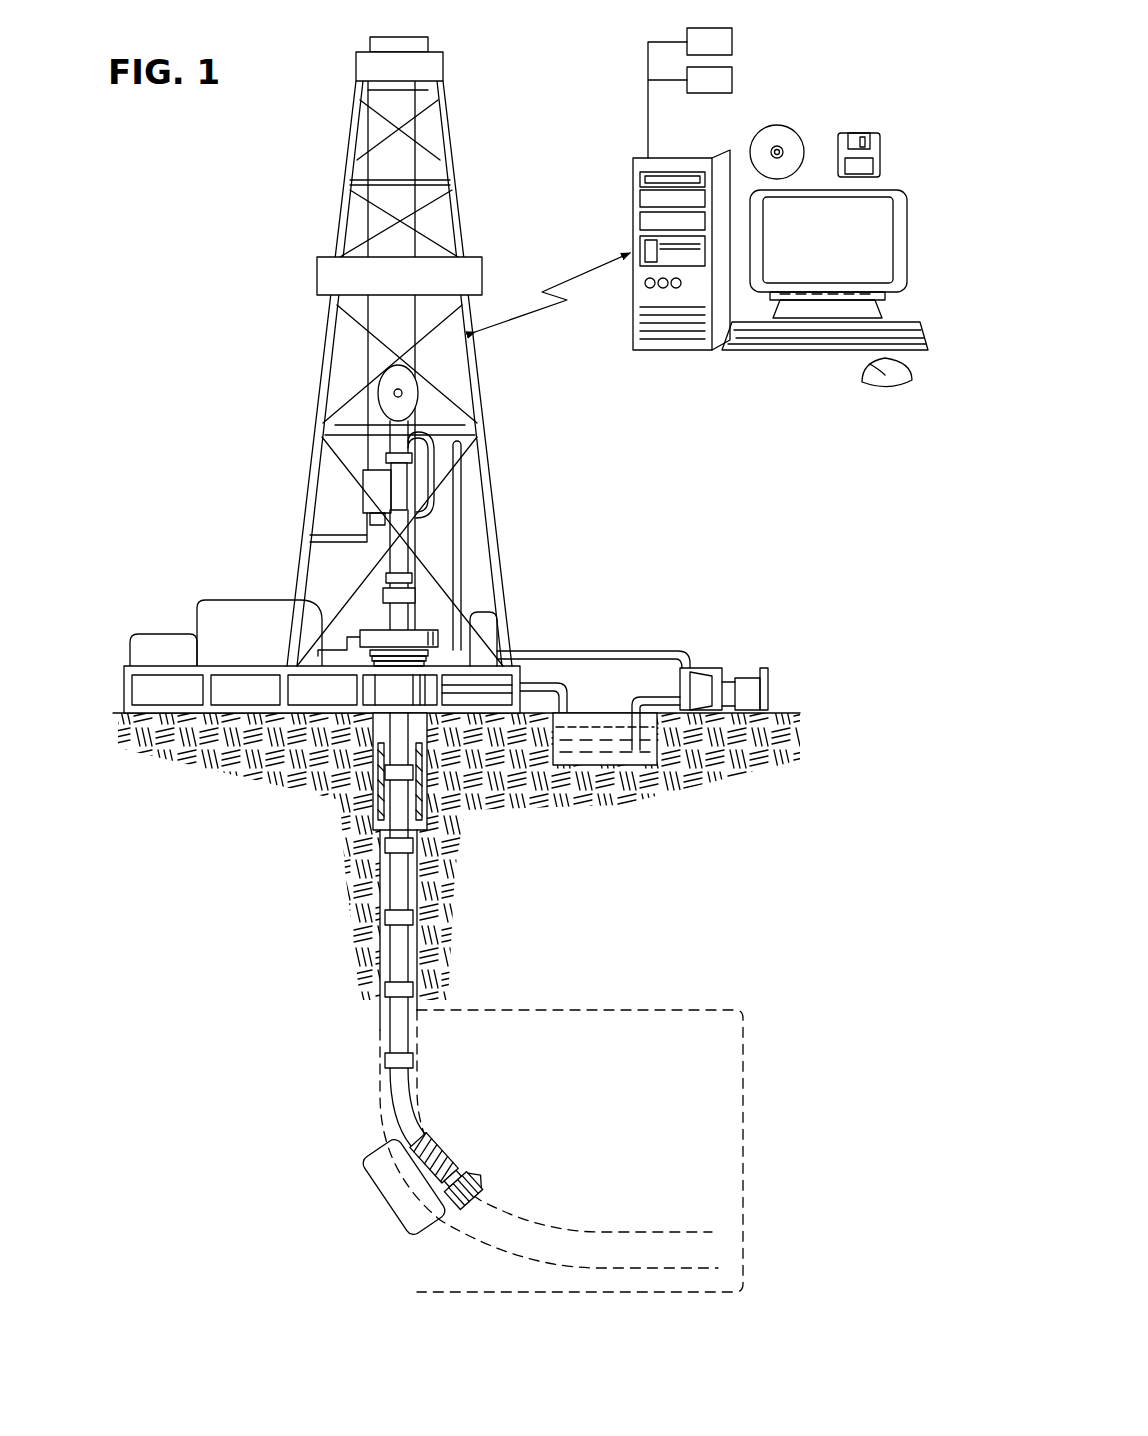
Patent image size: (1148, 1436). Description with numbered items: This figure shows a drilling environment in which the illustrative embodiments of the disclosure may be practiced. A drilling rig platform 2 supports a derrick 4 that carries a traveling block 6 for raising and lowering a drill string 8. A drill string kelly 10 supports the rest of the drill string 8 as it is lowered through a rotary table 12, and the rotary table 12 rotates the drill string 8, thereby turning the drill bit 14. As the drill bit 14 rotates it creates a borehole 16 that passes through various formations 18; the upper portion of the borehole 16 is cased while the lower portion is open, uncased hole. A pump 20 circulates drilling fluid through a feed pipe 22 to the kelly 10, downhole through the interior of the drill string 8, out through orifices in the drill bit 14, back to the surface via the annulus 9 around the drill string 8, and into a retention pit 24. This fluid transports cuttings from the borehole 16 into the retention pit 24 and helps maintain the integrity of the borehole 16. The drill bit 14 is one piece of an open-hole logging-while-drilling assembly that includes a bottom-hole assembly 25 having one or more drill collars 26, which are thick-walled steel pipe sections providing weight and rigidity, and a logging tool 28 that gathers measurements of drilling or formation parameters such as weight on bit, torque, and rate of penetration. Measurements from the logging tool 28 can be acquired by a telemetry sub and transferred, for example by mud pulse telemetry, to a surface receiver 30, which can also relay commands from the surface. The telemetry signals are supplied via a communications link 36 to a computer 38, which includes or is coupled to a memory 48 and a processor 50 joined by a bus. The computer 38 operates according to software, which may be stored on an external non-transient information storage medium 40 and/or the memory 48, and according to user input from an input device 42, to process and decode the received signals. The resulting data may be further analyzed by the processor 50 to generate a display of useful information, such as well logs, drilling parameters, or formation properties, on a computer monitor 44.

The drilling rig platform 2 is at (124, 690).
The derrick 4 is at (453, 137).
The traveling block 6 is at (408, 392).
The drill string 8 is at (408, 872).
The annulus 9 is at (385, 885).
The drill string kelly 10 is at (402, 482).
The rotary table 12 is at (420, 642).
The drill bit 14 is at (462, 1188).
The borehole 16 is at (418, 907).
The formations 18 is at (743, 1145).
The pump 20 is at (700, 688).
The feed pipe 22 is at (613, 650).
The retention pit 24 is at (573, 758).
The bottom-hole assembly 25 is at (383, 1205).
The drill collars 26 is at (442, 1168).
The logging tool 28 is at (428, 1142).
The surface receiver 30 is at (418, 598).
The communications link 36 is at (583, 272).
The computer 38 is at (663, 350).
The external non-transient information storage medium 40 is at (857, 133).
The input device 42 is at (815, 350).
The computer monitor 44 is at (900, 190).
The memory 48 is at (732, 80).
The processor 50 is at (732, 42).